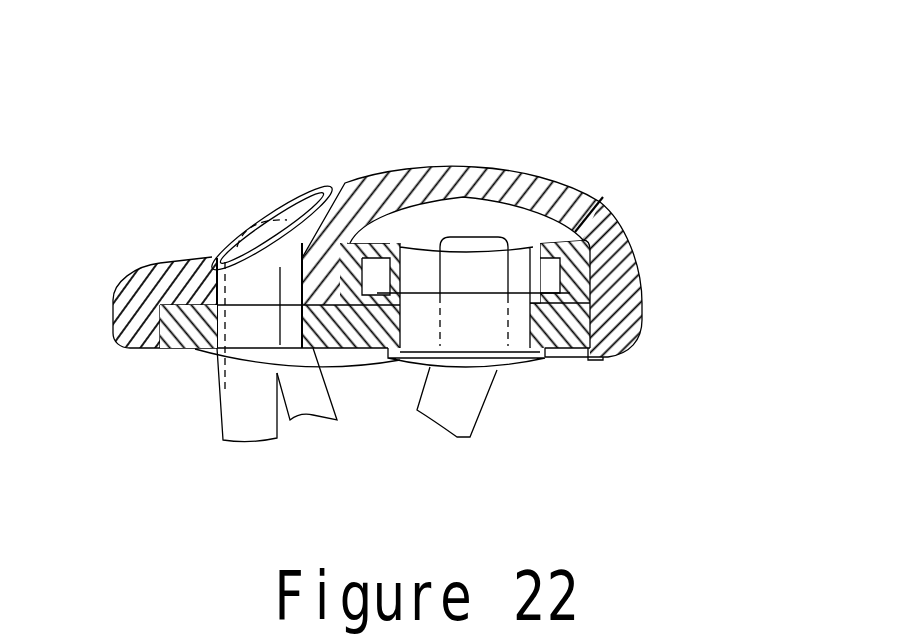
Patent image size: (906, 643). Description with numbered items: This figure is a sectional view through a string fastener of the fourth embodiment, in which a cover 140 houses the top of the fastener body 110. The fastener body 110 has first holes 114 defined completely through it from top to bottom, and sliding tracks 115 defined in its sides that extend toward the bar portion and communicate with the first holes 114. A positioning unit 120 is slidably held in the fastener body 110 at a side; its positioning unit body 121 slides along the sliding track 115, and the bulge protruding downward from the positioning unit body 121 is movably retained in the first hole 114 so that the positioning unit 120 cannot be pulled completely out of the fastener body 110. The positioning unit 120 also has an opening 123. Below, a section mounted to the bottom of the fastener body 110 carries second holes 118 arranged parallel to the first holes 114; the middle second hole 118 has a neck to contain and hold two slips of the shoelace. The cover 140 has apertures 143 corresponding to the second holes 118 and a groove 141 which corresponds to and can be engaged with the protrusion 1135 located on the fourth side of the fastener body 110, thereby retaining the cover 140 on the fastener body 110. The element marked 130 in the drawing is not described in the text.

The fastener body 110 is at (578, 226).
The first hole 114 is at (427, 308).
The sliding track 115 is at (557, 300).
The second hole 118 is at (215, 352).
The positioning unit 120 is at (458, 248).
The positioning unit body 121 is at (356, 328).
The opening 123 is at (497, 236).
The circuit board 130 is at (213, 423).
The cover 140 is at (360, 180).
The groove 141 is at (642, 296).
The aperture 143 is at (297, 232).
The protrusion 1135 is at (603, 350).